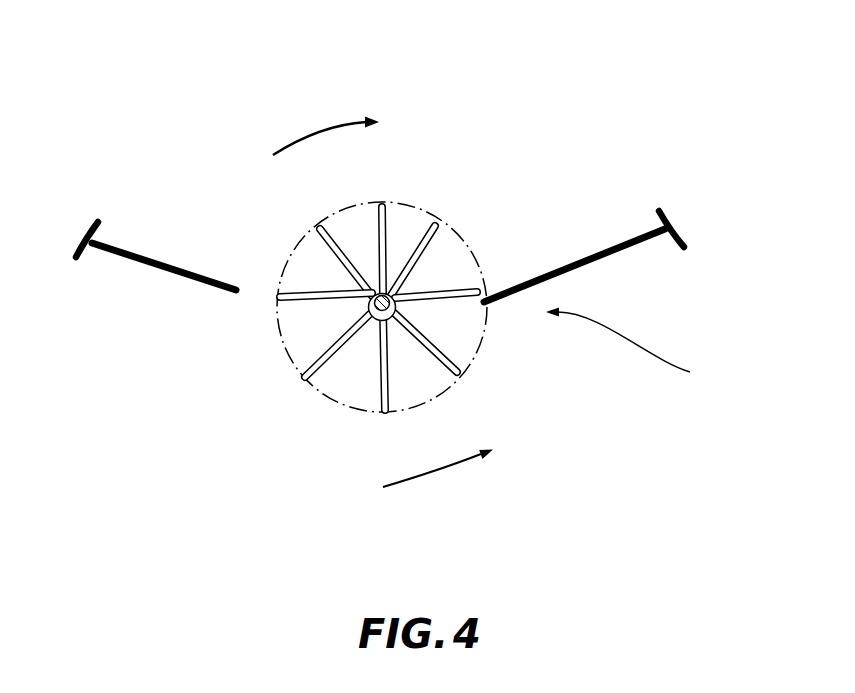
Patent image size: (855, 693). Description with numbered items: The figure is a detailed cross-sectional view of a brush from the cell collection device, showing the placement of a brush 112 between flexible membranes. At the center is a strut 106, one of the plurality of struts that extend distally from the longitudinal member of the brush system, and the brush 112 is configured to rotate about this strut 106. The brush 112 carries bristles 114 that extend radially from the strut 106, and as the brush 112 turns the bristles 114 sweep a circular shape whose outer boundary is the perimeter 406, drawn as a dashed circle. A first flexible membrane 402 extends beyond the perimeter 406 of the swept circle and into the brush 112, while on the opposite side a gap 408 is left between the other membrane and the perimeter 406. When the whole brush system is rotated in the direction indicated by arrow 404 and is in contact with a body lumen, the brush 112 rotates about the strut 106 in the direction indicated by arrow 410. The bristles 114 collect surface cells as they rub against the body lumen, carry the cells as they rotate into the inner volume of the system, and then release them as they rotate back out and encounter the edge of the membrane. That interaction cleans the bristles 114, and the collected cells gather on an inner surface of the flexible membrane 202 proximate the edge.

The strut 106 is at (386, 295).
The bristles 114 is at (368, 278).
The flexible membrane 202 is at (407, 238).
The first flexible membrane 402 is at (584, 258).
The gap 408 is at (258, 297).
The perimeter 406 is at (283, 345).
The arrow 410 is at (312, 133).
The arrow 404 is at (440, 478).
The brush 112 is at (646, 348).